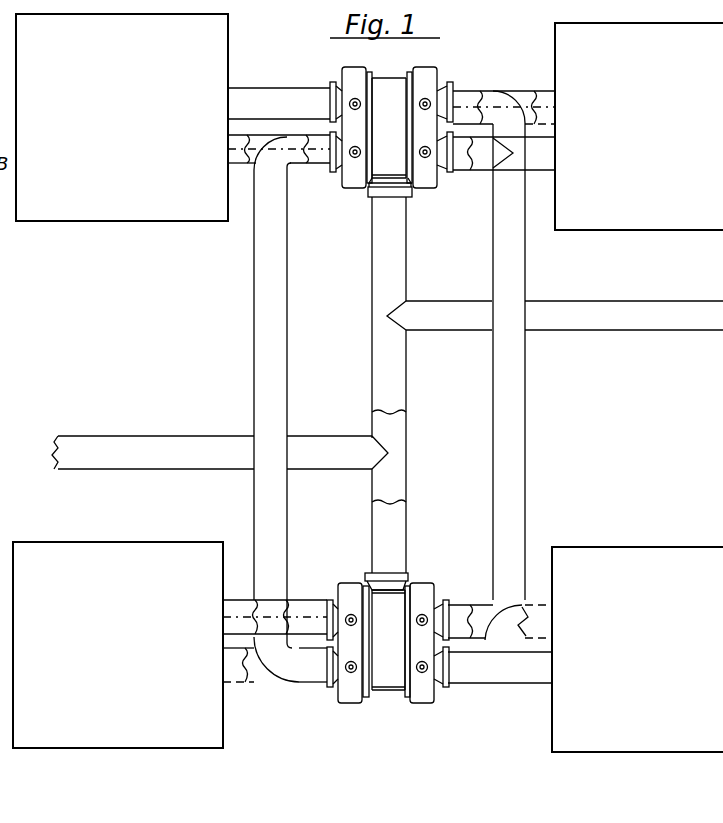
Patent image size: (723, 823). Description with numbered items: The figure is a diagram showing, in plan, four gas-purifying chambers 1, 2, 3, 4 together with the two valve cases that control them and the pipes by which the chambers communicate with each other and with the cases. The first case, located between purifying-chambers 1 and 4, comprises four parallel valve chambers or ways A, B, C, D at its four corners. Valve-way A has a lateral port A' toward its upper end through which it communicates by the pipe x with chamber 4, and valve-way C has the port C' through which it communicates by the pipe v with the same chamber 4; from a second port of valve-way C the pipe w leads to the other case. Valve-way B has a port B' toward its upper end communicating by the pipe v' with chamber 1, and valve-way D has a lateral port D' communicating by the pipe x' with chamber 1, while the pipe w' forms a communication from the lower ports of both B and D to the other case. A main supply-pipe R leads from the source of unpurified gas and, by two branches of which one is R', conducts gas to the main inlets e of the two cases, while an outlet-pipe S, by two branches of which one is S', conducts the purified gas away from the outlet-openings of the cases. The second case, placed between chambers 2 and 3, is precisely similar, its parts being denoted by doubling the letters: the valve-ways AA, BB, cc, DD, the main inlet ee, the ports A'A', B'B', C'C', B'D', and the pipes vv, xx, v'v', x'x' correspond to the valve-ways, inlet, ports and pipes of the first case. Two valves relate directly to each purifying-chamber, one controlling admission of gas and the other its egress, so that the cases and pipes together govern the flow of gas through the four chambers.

The purifying-chamber 1 is at (639, 126).
The purifying-chamber 2 is at (637, 649).
The purifying-chamber 3 is at (118, 645).
The purifying-chamber 4 is at (122, 117).
The valve chamber or way A is at (355, 97).
The valve chamber or way B is at (425, 97).
The valve chamber or way C is at (355, 161).
The valve chamber or way D is at (425, 161).
The lateral port A' is at (338, 122).
The port B' is at (442, 122).
The port C' is at (326, 169).
The lateral port D' is at (453, 173).
The main inlet e is at (373, 197).
The pipe x is at (279, 103).
The pipe v is at (279, 176).
The pipe w is at (276, 409).
The pipe v' is at (504, 89).
The pipe x' is at (504, 175).
The pipe w' is at (506, 365).
The branch R' is at (408, 304).
The main supply-pipe R is at (555, 316).
The branch S' is at (410, 439).
The outlet-pipe S is at (220, 452).
The main inlet ee is at (387, 578).
The valve chamber or way cc is at (422, 607).
The valve chamber or way DD is at (350, 607).
The ports B'D' is at (280, 611).
The pipe x'x' is at (275, 665).
The port B'B' is at (319, 684).
The pipe v'v' is at (277, 679).
The valve chamber or way BB is at (350, 690).
The port C'C' is at (493, 604).
The pipe vv is at (477, 612).
The pipe xx is at (500, 667).
The lateral port A'A' is at (485, 684).
The valve chamber or way AA is at (425, 682).